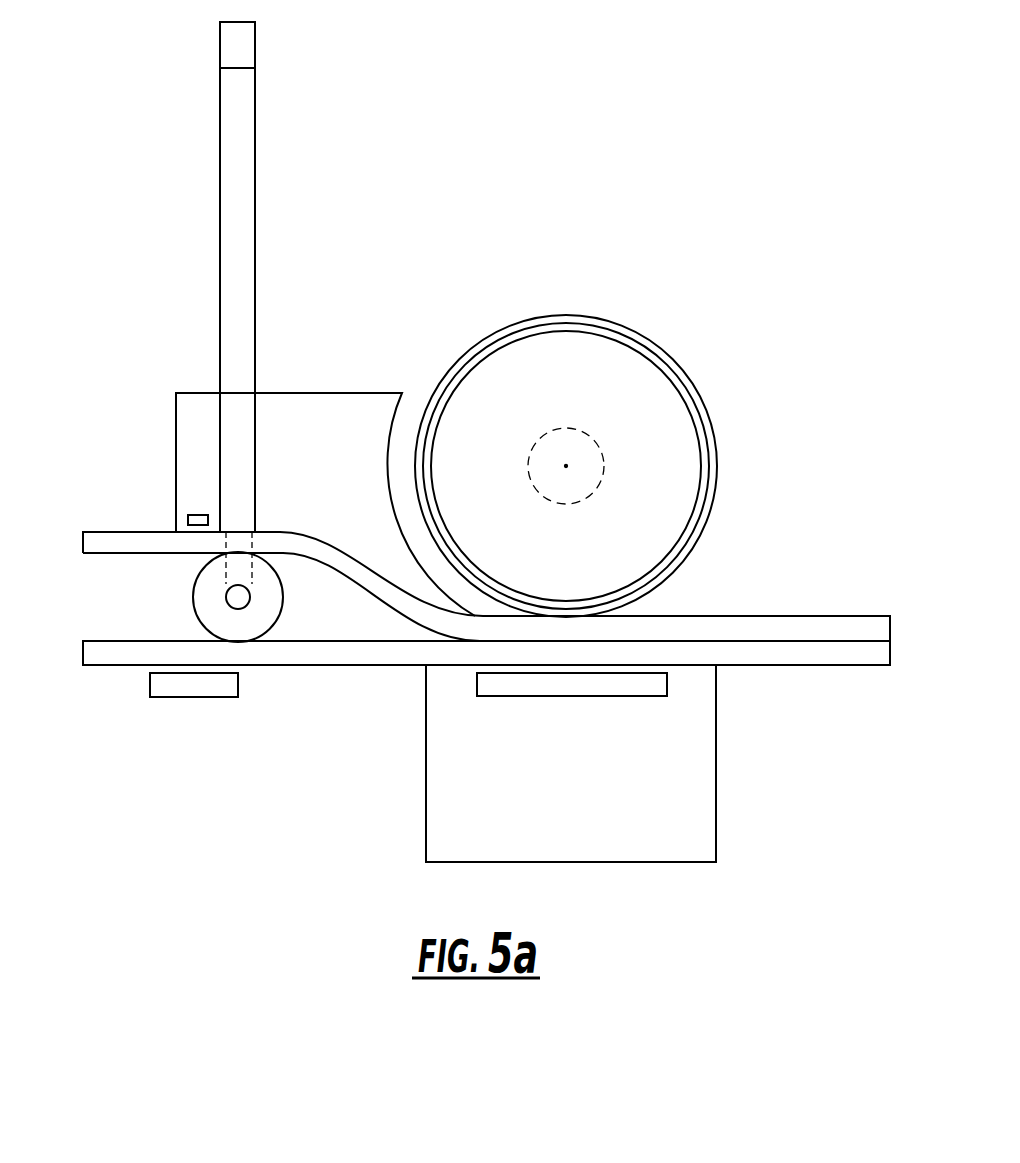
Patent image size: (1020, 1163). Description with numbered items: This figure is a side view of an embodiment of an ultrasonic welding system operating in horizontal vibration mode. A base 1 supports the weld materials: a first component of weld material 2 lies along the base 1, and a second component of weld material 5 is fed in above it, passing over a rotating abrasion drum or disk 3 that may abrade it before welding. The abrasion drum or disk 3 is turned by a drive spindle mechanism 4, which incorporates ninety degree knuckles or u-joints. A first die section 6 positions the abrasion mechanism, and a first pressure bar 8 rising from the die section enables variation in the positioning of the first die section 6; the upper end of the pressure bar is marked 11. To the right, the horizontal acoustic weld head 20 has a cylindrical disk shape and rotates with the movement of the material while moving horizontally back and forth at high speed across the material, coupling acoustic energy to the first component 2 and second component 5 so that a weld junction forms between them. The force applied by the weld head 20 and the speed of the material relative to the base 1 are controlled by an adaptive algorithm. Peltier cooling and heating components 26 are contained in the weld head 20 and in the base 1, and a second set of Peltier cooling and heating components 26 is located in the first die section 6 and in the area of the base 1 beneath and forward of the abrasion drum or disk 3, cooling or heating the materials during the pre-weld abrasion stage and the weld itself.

The base 1 is at (581, 749).
The first component of weld material 2 is at (83, 656).
The rotating abrasion drum or disk 3 is at (194, 611).
The drive spindle mechanism 4 is at (217, 475).
The second component of weld material 5 is at (84, 543).
The first die section 6 is at (187, 427).
The first pressure bar 8 is at (228, 280).
The end cap 11 is at (247, 48).
The horizontal acoustic weld head 20 is at (665, 355).
The Peltier cooling and heating components 26 is at (187, 518).